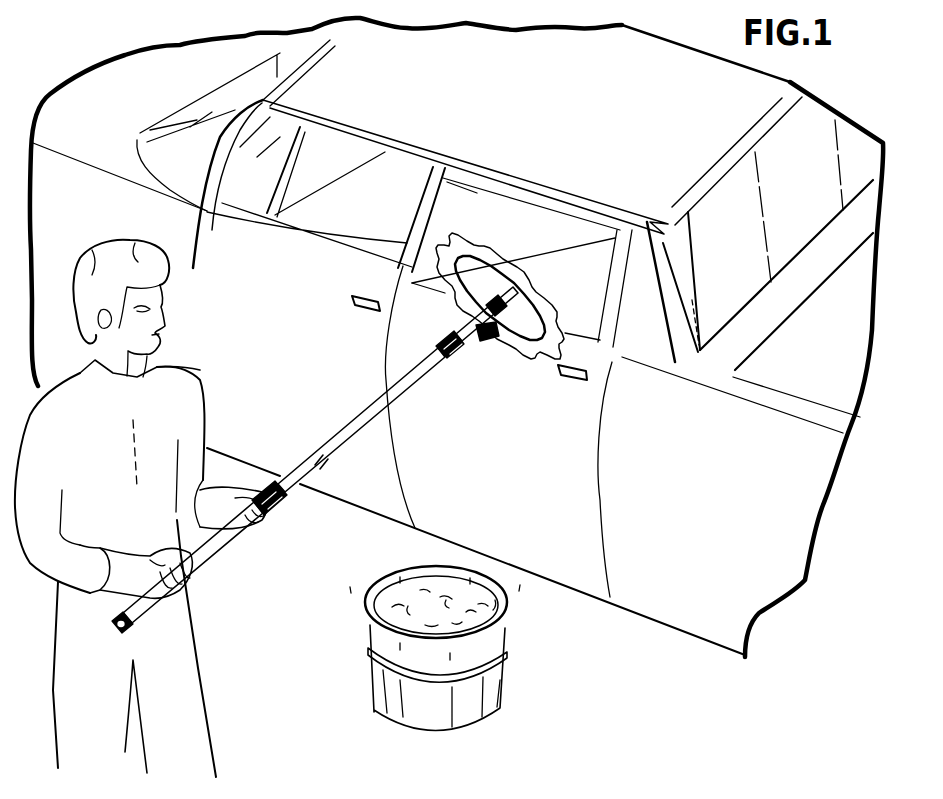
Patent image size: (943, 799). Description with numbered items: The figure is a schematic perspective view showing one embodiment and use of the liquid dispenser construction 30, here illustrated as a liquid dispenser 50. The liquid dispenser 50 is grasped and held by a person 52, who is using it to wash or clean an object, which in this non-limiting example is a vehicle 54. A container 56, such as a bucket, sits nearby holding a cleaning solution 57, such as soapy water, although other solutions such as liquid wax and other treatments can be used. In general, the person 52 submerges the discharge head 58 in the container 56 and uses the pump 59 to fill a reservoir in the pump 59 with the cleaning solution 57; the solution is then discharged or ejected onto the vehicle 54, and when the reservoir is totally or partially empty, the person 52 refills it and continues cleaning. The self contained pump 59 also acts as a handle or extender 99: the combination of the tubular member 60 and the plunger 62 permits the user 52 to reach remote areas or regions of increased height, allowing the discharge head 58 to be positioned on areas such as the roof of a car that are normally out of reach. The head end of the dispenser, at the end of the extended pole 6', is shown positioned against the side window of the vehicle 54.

The vehicle 54 is at (680, 58).
The cleaning head 6' is at (500, 292).
The liquid dispenser construction 30 is at (338, 429).
The liquid dispenser 50 is at (321, 460).
The person 52 is at (192, 442).
The handle or extender 99 is at (320, 460).
The pump 59 is at (320, 468).
The tubular member 60 is at (416, 382).
The discharge head 58 is at (497, 350).
The plunger 62 is at (221, 548).
The cleaning solution 57 is at (391, 597).
The container 56 is at (501, 678).